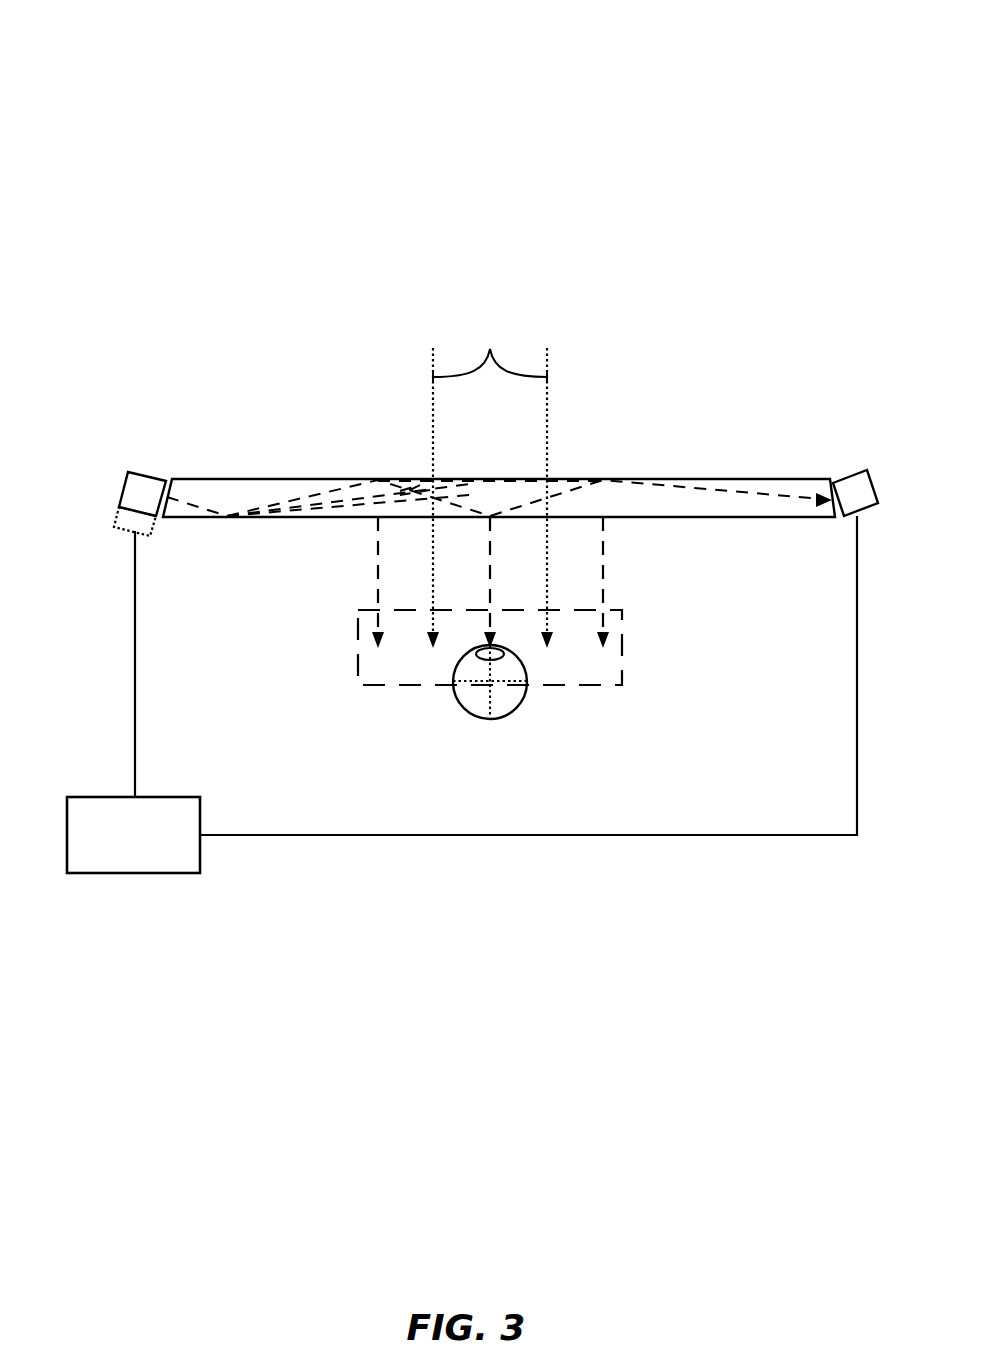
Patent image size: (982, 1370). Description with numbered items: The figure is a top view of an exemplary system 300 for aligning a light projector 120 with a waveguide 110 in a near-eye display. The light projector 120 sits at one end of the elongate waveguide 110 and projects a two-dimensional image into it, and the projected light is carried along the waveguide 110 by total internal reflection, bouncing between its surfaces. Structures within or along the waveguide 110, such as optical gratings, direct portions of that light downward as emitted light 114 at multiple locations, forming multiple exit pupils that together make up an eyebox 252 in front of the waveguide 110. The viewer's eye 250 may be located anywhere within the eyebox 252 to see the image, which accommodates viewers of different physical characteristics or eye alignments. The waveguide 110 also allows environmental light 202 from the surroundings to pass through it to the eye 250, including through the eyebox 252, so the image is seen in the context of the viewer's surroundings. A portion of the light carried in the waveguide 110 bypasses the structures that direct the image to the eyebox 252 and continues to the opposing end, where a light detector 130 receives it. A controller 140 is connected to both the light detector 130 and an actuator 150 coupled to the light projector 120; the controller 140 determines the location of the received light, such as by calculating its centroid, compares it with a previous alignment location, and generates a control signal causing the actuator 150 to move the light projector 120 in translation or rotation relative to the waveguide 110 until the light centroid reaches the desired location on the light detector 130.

The system 300 is at (137, 108).
The waveguide 110 is at (423, 478).
The light projector 120 is at (148, 472).
The actuator 150 is at (127, 528).
The light detector 130 is at (849, 470).
The controller 140 is at (114, 863).
The emitted light 114 is at (378, 563).
The environmental light 202 is at (527, 455).
The eyebox 252 is at (612, 685).
The eye 250 is at (468, 715).